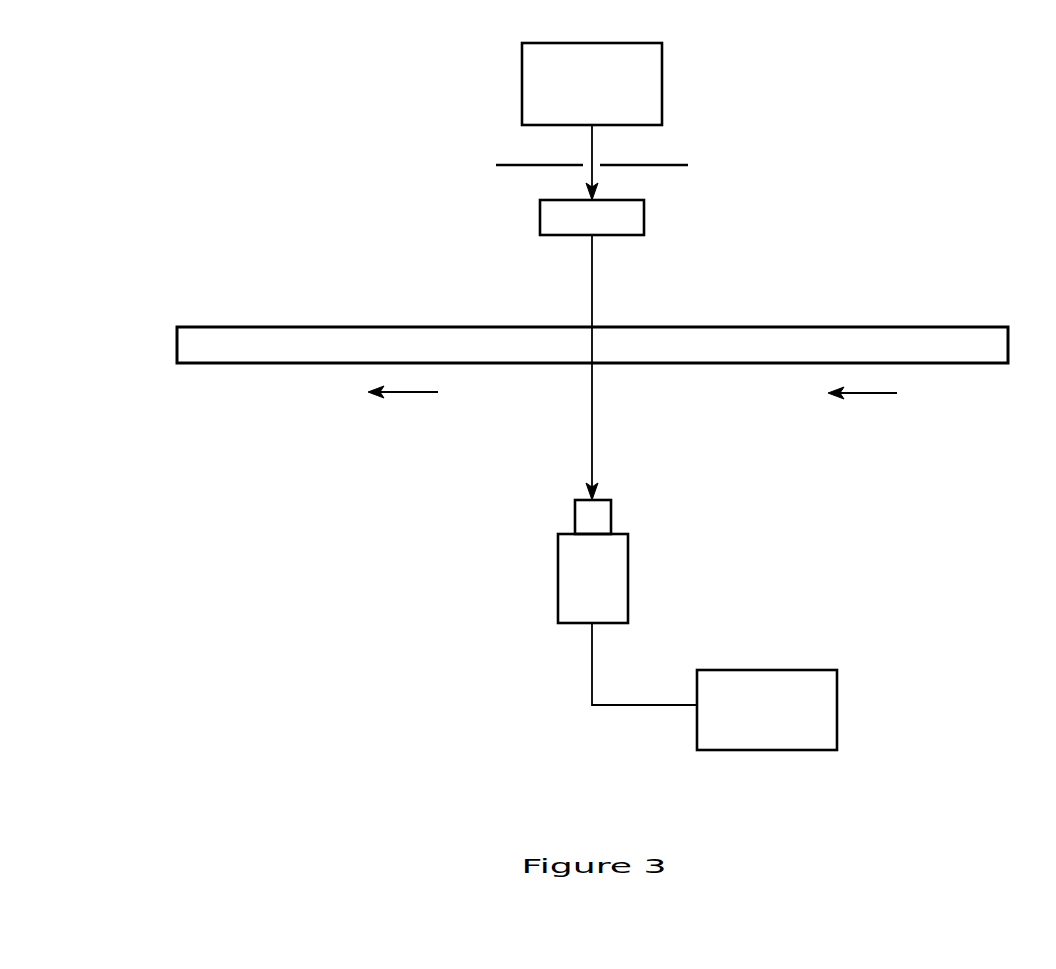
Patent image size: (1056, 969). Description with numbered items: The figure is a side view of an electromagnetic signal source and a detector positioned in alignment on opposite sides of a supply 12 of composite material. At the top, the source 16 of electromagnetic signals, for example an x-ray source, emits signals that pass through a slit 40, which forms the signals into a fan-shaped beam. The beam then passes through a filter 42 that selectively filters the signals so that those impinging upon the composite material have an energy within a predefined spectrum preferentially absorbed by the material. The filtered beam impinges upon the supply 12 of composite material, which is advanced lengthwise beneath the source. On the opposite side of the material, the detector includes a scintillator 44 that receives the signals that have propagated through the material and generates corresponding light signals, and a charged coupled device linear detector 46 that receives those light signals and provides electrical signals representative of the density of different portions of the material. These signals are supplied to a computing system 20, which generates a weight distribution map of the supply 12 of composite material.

The supply of composite material 12 is at (870, 327).
The source of electromagnetic signals 16 is at (662, 80).
The computing system 20 is at (783, 670).
The slit 40 is at (672, 165).
The filter 42 is at (625, 235).
The scintillator 44 is at (610, 517).
The charged coupled device (CCD) linear detector 46 is at (628, 583).